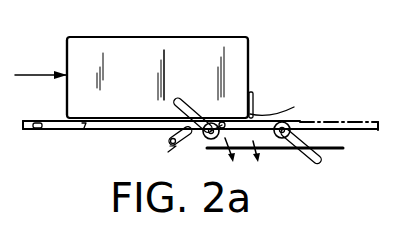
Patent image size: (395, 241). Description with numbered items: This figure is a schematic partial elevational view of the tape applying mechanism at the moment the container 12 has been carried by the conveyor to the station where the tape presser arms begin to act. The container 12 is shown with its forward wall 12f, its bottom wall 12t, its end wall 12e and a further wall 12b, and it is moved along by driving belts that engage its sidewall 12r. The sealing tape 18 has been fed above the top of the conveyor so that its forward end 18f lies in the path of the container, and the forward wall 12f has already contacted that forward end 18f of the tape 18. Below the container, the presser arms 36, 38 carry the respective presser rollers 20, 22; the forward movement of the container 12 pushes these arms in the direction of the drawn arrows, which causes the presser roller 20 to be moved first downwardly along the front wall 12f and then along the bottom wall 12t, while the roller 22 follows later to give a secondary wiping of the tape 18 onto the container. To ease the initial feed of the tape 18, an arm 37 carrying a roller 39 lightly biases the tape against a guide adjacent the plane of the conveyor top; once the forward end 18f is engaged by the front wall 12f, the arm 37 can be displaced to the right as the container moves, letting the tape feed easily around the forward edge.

The container 12 is at (254, 75).
The bottom wall 12t is at (163, 36).
The end wall 12e is at (66, 50).
The forward wall 12f is at (249, 51).
The bottom wall 12b is at (118, 121).
The container sidewall 12r is at (205, 77).
The tape 18 is at (333, 152).
The forward end of the tape 18f is at (291, 109).
The presser roller 20 is at (252, 98).
The roller 22 is at (289, 126).
The presser arm 36 is at (188, 153).
The arm 37 is at (170, 150).
The presser arm 38 is at (305, 157).
The roller 39 is at (175, 118).